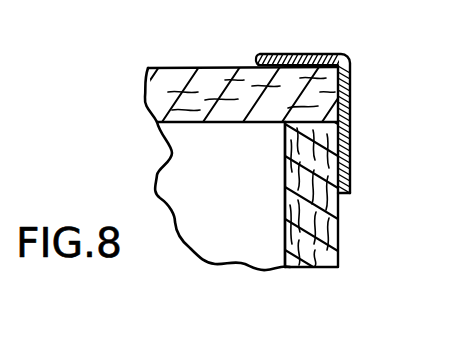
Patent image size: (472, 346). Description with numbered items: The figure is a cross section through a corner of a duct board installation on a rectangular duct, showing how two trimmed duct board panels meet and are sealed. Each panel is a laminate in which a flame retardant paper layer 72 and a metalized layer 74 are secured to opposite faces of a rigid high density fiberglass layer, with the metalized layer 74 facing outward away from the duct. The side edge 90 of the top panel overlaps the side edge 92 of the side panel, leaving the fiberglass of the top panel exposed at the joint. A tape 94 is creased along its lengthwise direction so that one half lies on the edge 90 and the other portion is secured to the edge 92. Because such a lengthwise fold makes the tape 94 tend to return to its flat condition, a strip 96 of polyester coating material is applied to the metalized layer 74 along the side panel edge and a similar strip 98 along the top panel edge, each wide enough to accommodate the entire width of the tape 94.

The flame retardant paper layer 72 is at (343, 248).
The metalized layer 74 is at (285, 215).
The side edge of panel 90 is at (210, 44).
The side edge of panel 92 is at (285, 160).
The tape 94 is at (351, 74).
The strip of coating material 96 is at (345, 194).
The strip of coating material 98 is at (262, 57).